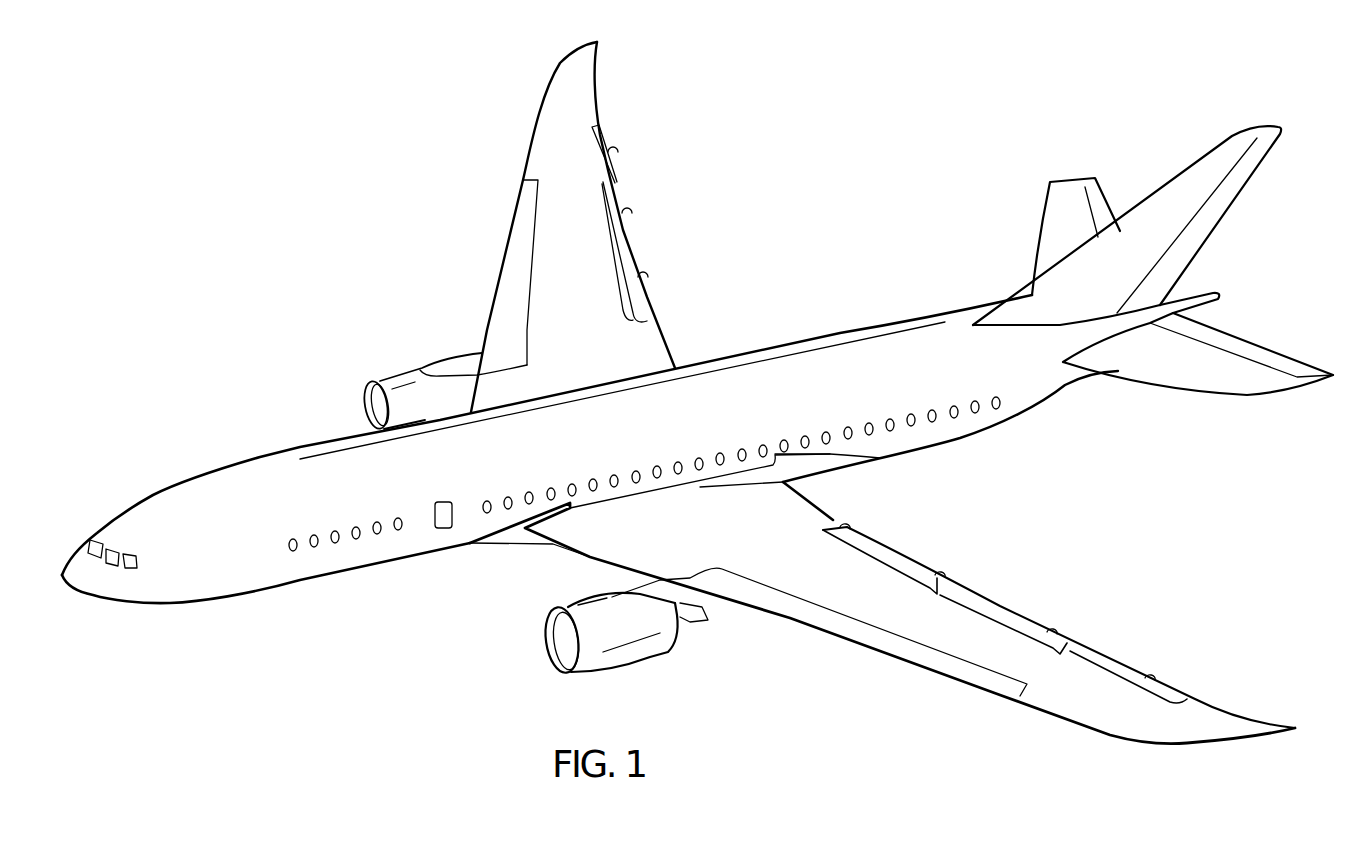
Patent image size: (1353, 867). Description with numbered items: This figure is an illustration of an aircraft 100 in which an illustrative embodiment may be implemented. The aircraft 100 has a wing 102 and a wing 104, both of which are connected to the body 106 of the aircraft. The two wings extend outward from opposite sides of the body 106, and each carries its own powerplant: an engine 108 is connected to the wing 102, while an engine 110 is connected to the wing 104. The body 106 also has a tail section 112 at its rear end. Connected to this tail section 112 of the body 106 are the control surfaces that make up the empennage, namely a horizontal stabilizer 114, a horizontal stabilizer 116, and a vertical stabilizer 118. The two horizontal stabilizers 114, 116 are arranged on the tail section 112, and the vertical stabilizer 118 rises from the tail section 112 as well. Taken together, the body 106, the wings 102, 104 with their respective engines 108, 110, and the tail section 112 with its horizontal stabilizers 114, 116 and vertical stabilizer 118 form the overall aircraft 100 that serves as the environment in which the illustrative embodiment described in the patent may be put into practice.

The aircraft 100 is at (697, 417).
The wing 102 is at (597, 74).
The wing 104 is at (1147, 740).
The body 106 is at (233, 463).
The engine 108 is at (403, 367).
The engine 110 is at (633, 667).
The tail section 112 is at (1153, 305).
The horizontal stabilizer 114 is at (1042, 237).
The horizontal stabilizer 116 is at (1202, 383).
The vertical stabilizer 118 is at (1230, 208).